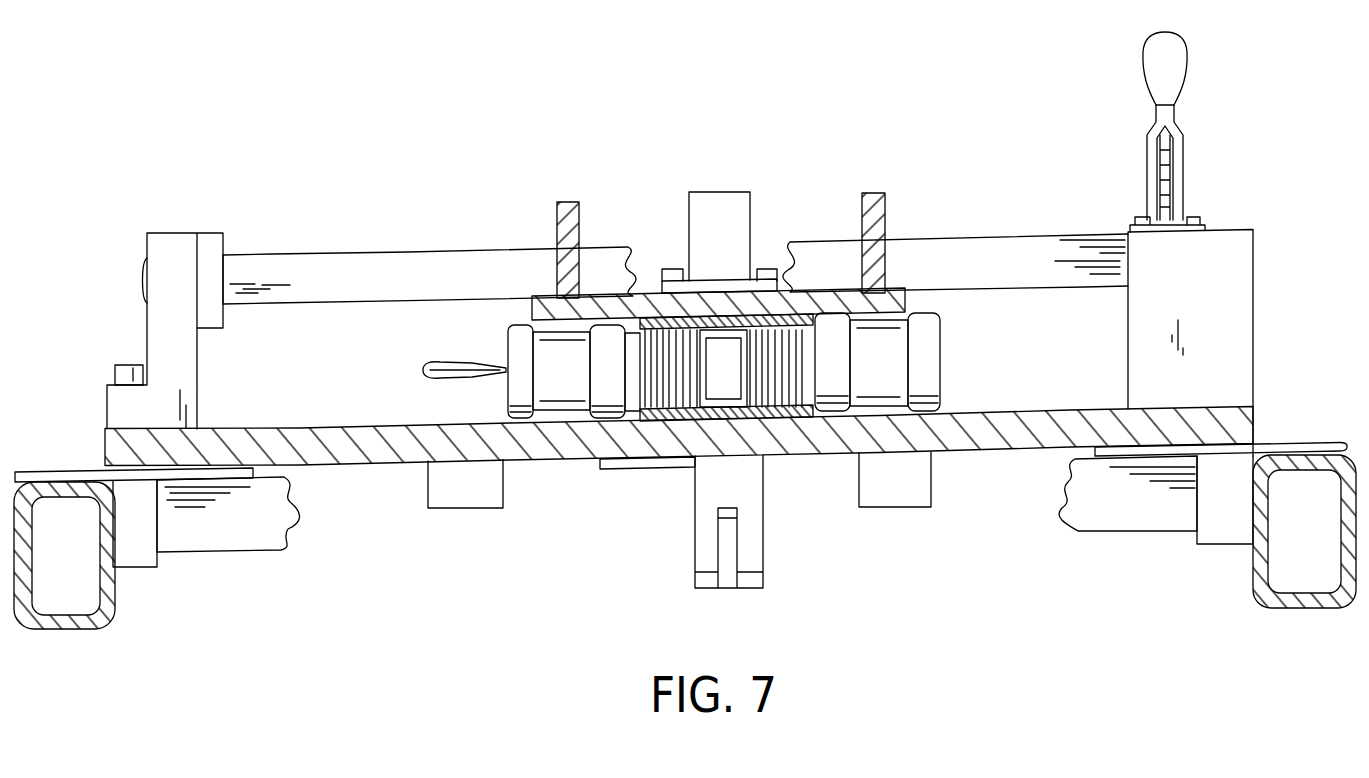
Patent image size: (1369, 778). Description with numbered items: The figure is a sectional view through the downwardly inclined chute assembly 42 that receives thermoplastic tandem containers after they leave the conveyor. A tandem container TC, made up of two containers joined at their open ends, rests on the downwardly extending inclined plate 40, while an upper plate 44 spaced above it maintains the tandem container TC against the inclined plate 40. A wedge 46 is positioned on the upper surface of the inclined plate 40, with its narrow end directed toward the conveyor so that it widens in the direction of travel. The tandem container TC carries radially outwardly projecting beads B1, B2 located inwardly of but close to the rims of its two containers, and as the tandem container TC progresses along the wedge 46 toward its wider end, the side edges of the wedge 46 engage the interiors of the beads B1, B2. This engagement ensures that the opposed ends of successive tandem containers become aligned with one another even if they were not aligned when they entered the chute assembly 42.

The inclined plate 40 is at (972, 433).
The chute assembly 42 is at (916, 250).
The upper plate 44 is at (818, 294).
The wedge 46 is at (757, 416).
The bead B1 is at (637, 416).
The bead B2 is at (818, 415).
The tandem container TC is at (945, 347).